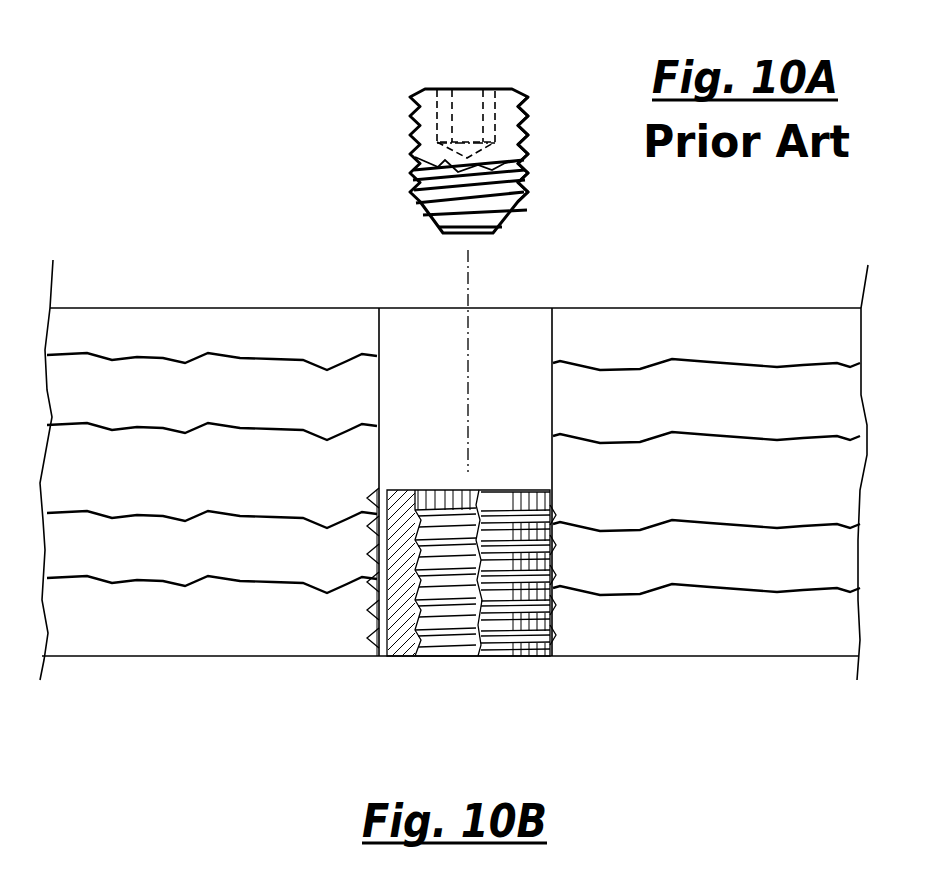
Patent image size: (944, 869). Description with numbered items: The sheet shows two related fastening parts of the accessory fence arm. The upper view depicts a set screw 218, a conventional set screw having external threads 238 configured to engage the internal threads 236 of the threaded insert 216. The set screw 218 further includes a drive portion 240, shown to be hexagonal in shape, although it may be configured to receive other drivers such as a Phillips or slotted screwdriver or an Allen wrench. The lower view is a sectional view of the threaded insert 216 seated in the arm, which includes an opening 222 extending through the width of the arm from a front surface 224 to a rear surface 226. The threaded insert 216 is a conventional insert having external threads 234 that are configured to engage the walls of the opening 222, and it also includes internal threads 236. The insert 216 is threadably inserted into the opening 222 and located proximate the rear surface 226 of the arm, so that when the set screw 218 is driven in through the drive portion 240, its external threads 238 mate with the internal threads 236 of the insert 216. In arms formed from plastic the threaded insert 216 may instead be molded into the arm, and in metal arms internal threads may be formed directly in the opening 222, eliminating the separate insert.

In FIG. 10A, the set screw 218 is at (352, 108).
In FIG. 10A, the external threads 238 is at (528, 100).
In FIG. 10A, the drive portion 240 is at (468, 100).
In FIG. 10B, the threaded insert 216 is at (487, 608).
In FIG. 10B, the opening 222 is at (512, 331).
In FIG. 10B, the front surface 224 is at (202, 308).
In FIG. 10B, the rear surface 226 is at (146, 657).
In FIG. 10B, the external threads 234 is at (548, 628).
In FIG. 10B, the internal threads 236 is at (428, 650).